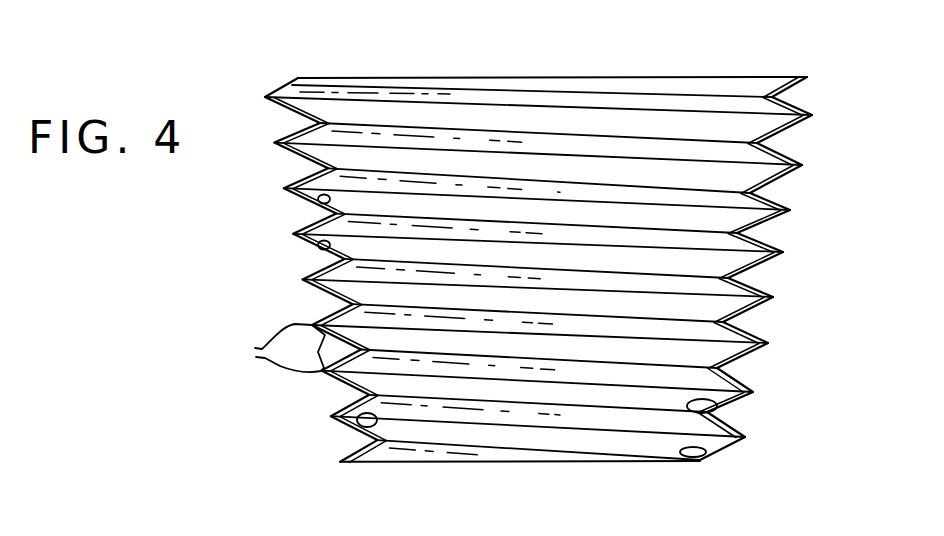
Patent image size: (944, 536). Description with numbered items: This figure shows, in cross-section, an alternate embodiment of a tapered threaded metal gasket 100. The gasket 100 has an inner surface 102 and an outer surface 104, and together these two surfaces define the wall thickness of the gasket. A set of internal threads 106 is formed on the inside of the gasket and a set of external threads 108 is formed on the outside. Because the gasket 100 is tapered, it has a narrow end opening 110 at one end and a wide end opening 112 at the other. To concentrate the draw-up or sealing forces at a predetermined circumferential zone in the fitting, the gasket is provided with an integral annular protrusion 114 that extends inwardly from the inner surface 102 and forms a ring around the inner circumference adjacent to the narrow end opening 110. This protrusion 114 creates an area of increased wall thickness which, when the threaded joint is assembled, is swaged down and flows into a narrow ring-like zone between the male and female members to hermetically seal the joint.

The threaded metal gasket 100 is at (683, 15).
The inner surface 102 is at (675, 463).
The outer surface 104 is at (742, 450).
The internal threads 106 is at (316, 203).
The external threads 108 is at (268, 348).
The narrow end opening 110 is at (620, 464).
The wide end opening 112 is at (518, 93).
The integral annular protrusion 114 is at (360, 433).